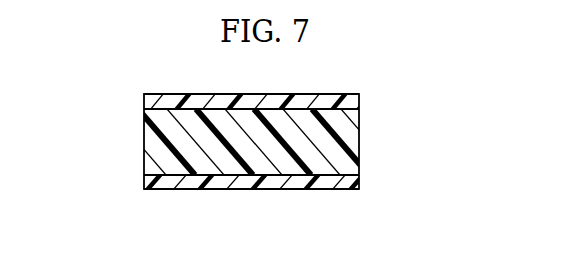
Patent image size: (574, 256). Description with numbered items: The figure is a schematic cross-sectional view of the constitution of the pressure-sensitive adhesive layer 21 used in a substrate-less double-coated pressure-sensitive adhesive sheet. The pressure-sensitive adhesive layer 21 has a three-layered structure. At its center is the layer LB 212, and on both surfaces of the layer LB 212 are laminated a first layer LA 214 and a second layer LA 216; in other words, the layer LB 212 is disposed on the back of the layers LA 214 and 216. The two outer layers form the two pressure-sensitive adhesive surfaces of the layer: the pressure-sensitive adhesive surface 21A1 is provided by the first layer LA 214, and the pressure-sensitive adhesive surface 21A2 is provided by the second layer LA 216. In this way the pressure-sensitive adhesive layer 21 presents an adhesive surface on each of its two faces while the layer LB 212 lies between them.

The pressure-sensitive adhesive layer 21 is at (308, 142).
The layer LB 212 is at (352, 147).
The first layer LA 214 is at (360, 101).
The second layer LA 216 is at (360, 185).
The pressure-sensitive adhesive surface 21A1 is at (165, 189).
The pressure-sensitive adhesive surface 21A2 is at (170, 94).